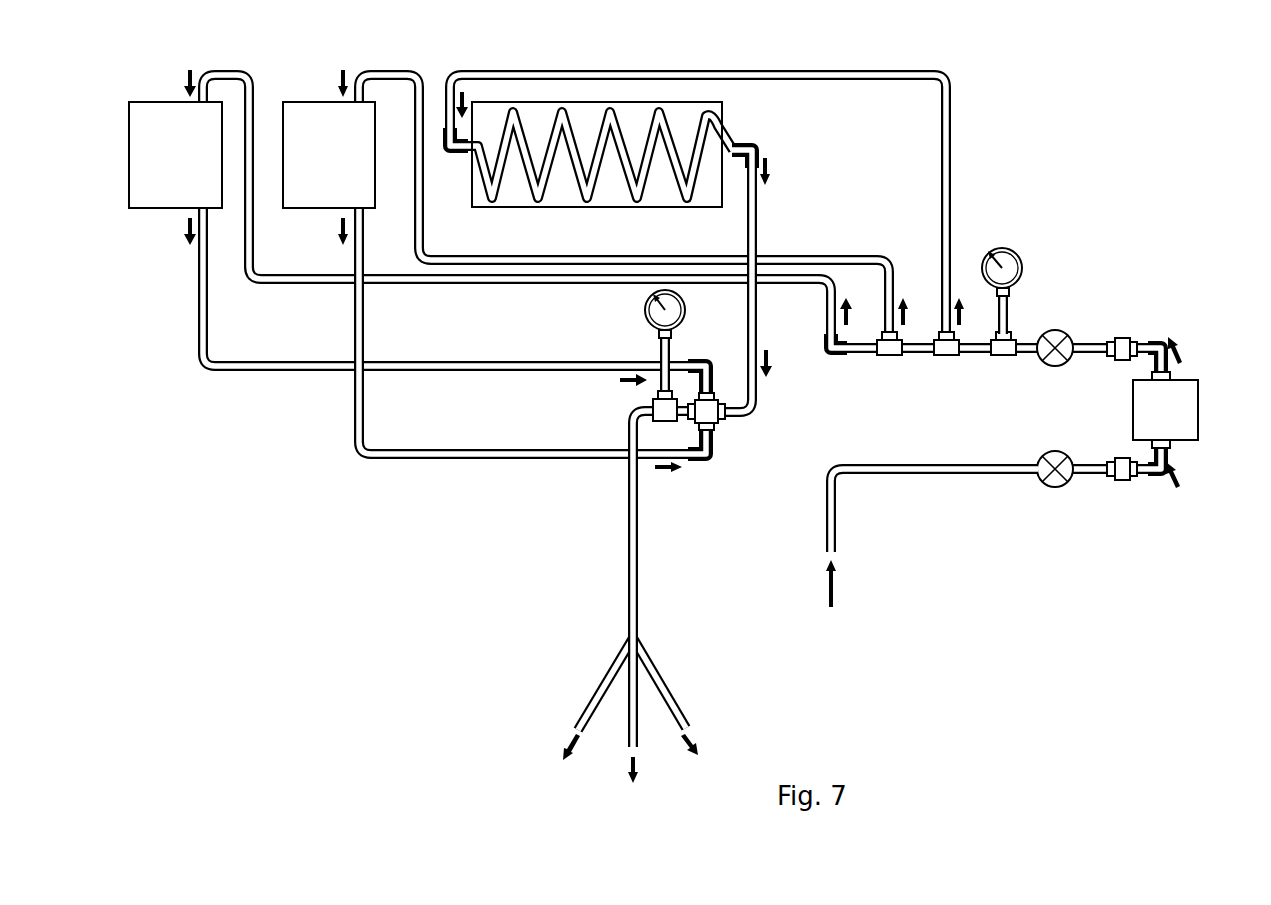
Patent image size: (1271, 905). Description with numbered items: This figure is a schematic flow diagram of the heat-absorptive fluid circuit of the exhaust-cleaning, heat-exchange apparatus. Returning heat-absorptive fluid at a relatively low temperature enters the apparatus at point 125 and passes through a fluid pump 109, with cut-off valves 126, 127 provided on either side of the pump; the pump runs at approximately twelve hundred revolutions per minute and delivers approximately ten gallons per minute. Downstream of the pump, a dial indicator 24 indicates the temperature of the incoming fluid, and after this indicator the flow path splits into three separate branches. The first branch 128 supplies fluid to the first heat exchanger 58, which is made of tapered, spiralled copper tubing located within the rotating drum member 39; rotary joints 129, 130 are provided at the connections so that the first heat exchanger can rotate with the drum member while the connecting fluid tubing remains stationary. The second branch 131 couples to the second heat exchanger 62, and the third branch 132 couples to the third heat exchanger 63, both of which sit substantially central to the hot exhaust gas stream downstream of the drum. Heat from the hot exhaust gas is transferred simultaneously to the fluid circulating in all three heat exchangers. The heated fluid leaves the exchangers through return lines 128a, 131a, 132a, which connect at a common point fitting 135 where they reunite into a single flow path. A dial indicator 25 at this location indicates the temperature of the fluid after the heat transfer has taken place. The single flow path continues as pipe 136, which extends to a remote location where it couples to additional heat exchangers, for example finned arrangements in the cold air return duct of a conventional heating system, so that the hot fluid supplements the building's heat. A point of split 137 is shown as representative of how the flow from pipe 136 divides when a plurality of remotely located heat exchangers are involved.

The third heat exchanger 63 is at (147, 102).
The second heat exchanger 62 is at (304, 102).
The rotary joint 130 is at (458, 146).
The drum member 39 is at (573, 102).
The first heat exchanger 58 is at (707, 118).
The rotary joint 129 is at (760, 148).
The return line 128a is at (757, 215).
The first branch 128 is at (946, 183).
The dial indicator 24 is at (1022, 260).
The second branch 131 is at (845, 260).
The cut-off valve 127 is at (1070, 337).
The dial indicator 25 is at (645, 312).
The third branch 132 is at (822, 288).
The return line 131a is at (362, 340).
The return line 132a is at (250, 367).
The fluid pump 109 is at (1188, 403).
The common point fitting 135 is at (715, 423).
The point 125 is at (837, 540).
The cut-off valve 126 is at (1067, 490).
The pipe 136 is at (634, 552).
The point of split 137 is at (627, 643).